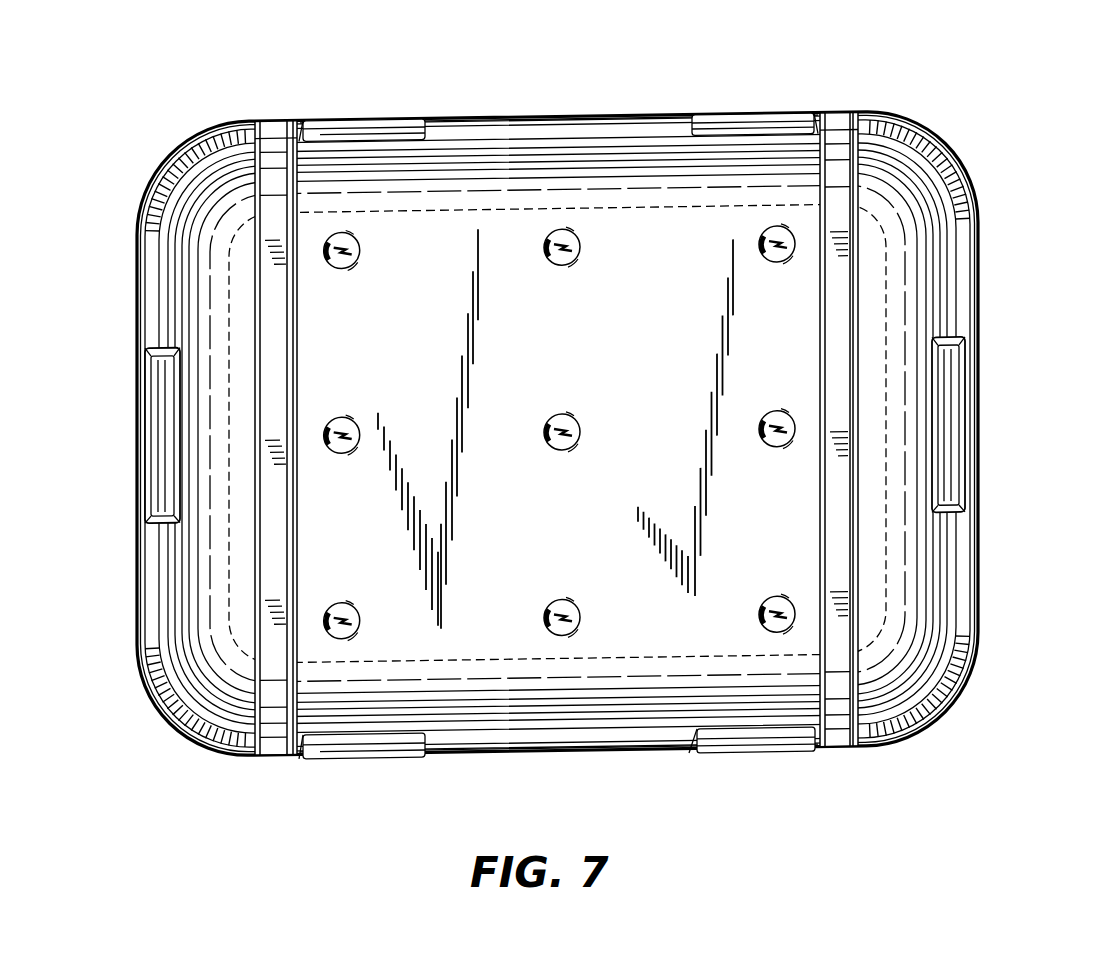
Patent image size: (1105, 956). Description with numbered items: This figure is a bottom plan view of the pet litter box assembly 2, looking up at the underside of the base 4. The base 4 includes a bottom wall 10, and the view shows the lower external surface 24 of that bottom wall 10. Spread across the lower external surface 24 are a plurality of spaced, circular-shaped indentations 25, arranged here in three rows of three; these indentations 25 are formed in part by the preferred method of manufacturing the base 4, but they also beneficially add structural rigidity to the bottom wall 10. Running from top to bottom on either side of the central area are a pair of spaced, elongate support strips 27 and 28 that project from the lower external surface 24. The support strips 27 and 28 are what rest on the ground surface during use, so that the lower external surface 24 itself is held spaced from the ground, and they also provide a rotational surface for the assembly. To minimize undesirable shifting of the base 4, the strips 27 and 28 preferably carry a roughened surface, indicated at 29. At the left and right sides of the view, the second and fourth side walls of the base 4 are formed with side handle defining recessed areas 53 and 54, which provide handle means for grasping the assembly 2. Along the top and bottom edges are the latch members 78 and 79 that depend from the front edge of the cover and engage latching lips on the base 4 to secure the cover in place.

The pet litter box assembly 2 is at (977, 125).
The base 4 is at (585, 134).
The bottom wall 10 is at (612, 645).
The lower external surface 24 is at (652, 383).
The circular-shaped indentations 25 is at (578, 243).
The support strip 27 is at (278, 396).
The support strip 28 is at (836, 406).
The roughened surface 29 is at (539, 427).
The side handle defining recessed area 53 is at (168, 492).
The side handle defining recessed area 54 is at (940, 434).
The latch member 78 is at (408, 126).
The latch member 79 is at (768, 126).